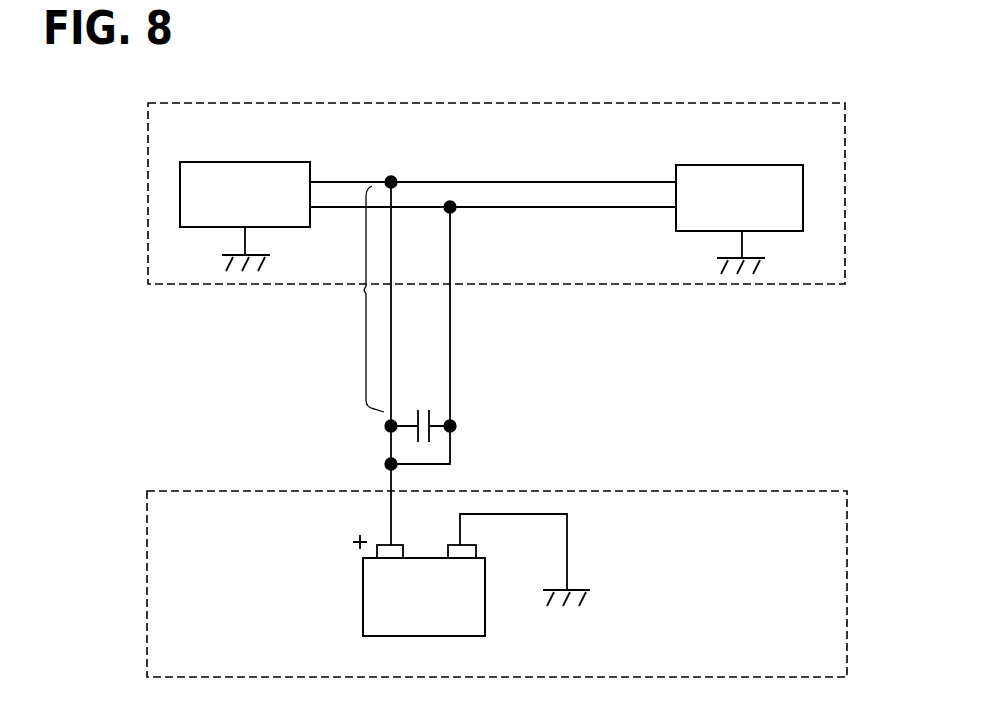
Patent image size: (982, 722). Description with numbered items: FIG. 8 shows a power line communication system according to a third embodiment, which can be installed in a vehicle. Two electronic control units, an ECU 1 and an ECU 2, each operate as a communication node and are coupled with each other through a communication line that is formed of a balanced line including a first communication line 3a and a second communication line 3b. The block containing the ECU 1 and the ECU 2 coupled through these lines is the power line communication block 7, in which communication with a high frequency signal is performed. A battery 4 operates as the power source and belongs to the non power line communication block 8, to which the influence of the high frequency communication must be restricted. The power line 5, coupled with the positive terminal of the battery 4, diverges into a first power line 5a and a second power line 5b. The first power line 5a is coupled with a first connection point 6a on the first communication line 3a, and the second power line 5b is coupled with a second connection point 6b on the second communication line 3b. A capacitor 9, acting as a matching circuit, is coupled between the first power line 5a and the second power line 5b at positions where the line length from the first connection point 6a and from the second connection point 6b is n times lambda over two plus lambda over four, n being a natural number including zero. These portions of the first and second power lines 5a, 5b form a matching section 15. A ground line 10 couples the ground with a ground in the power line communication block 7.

The electronic control unit 1 is at (240, 162).
The electronic control unit 2 is at (739, 165).
The first communication line 3a is at (665, 182).
The second communication line 3b is at (555, 210).
The battery 4 is at (363, 583).
The power line 5 is at (388, 472).
The first power line 5a is at (388, 423).
The second power line 5b is at (452, 420).
The first connection point 6a is at (389, 176).
The second connection point 6b is at (452, 212).
The power line communication block 7 is at (486, 103).
The non power line communication block 8 is at (645, 490).
The capacitor 9 is at (420, 405).
The ground line 10 is at (450, 322).
The matching section 15 is at (335, 378).